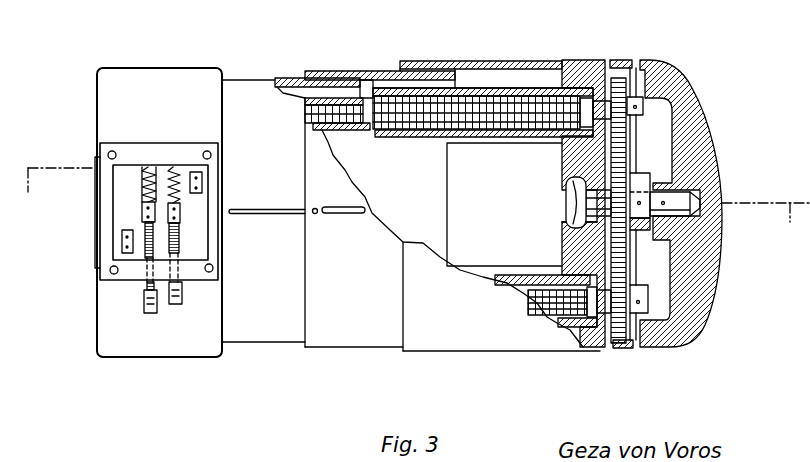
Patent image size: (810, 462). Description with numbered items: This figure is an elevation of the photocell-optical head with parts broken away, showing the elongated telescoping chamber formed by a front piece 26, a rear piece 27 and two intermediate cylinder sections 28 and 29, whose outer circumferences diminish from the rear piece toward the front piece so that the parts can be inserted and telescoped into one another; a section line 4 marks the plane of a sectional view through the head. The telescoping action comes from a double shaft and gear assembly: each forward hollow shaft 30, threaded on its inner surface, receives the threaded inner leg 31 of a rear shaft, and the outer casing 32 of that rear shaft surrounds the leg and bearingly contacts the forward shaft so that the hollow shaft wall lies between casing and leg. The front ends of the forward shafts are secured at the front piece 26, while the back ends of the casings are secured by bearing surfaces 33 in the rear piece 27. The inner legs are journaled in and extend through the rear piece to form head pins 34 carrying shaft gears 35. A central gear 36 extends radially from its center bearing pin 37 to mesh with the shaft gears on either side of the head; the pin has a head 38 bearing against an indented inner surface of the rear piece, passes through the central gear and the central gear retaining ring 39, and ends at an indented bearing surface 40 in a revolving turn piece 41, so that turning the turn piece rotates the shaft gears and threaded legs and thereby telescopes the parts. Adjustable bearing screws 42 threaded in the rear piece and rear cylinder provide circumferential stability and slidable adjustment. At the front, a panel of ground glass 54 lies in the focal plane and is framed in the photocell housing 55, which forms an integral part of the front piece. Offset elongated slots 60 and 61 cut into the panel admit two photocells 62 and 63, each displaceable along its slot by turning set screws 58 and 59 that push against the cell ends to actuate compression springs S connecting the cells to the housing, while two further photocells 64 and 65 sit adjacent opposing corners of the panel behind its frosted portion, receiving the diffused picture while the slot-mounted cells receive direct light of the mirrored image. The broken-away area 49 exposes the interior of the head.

The section line 4- 4 is at (415, 205).
The front piece 26 is at (152, 80).
The rear piece 27 is at (572, 73).
The intermediate cylinder section 28 is at (345, 71).
The intermediate cylinder section 29 is at (292, 78).
The forward hollow shaft 30 is at (343, 131).
The inner leg of rear shaft 31 is at (400, 137).
The outer casing of rear shaft 32 is at (442, 138).
The bearing surface 33 is at (493, 86).
The head pin 34 is at (638, 97).
The shaft gear 35 is at (620, 82).
The central gear 36 is at (563, 240).
The center bearing pin 37 is at (688, 215).
The head of central gear pin 38 is at (580, 193).
The central gear retaining ring 39 is at (634, 173).
The indented bearing surface 40 is at (715, 177).
The revolving turn piece 41 is at (697, 280).
The adjustable bearing screw 42 is at (318, 214).
The frame body 49 is at (463, 185).
The panel of ground glass 54 is at (122, 216).
The photocell housing 55 is at (213, 210).
The set screw 58 is at (148, 313).
The set screw 59 is at (176, 305).
The elongated slot 60 is at (158, 168).
The elongated slot 61 is at (180, 242).
The photocell 62 is at (147, 212).
The photocell 63 is at (177, 215).
The photocell 64 is at (122, 243).
The photocell 65 is at (201, 185).
The compression spring S is at (143, 180).